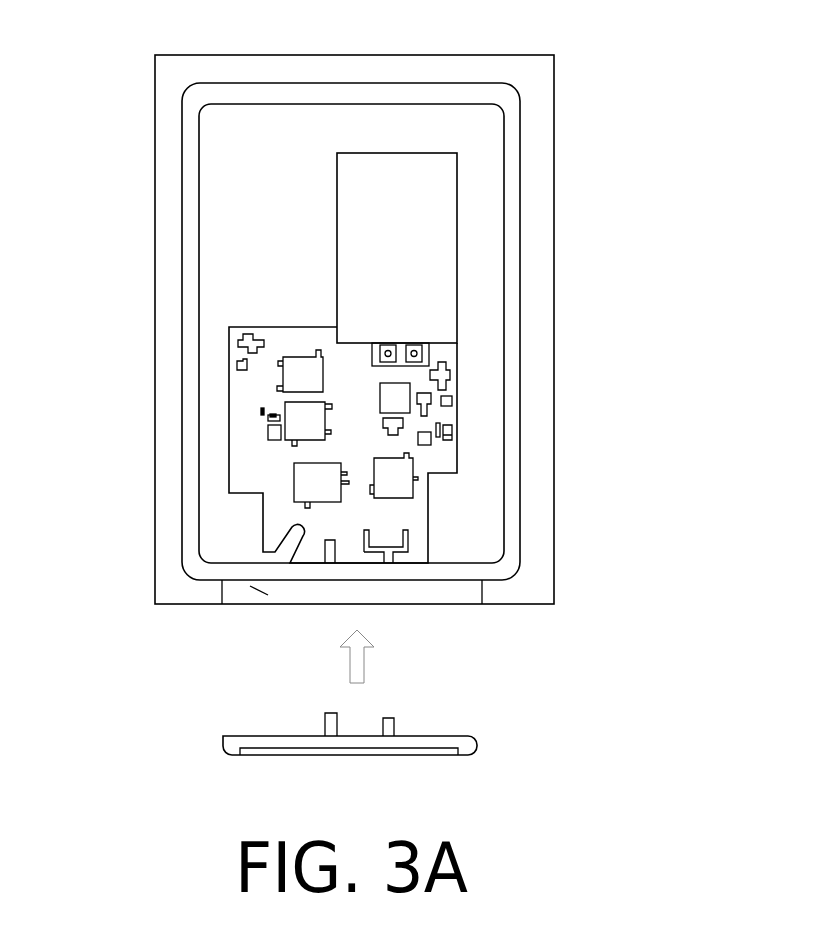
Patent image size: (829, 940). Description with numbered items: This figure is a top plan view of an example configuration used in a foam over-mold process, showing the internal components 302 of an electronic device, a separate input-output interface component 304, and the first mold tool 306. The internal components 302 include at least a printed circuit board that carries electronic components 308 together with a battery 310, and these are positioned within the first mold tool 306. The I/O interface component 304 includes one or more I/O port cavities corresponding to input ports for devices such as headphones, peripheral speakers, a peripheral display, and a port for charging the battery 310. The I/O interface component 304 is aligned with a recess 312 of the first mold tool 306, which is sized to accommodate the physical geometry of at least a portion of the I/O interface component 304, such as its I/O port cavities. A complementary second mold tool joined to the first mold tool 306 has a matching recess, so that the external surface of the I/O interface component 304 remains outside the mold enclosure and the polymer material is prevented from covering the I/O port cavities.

The internal components 302 is at (199, 212).
The I/O interface component 304 is at (470, 753).
The first mold tool 306 is at (554, 153).
The electronic components 308 is at (229, 450).
The battery 310 is at (401, 153).
The recess 312 is at (256, 590).